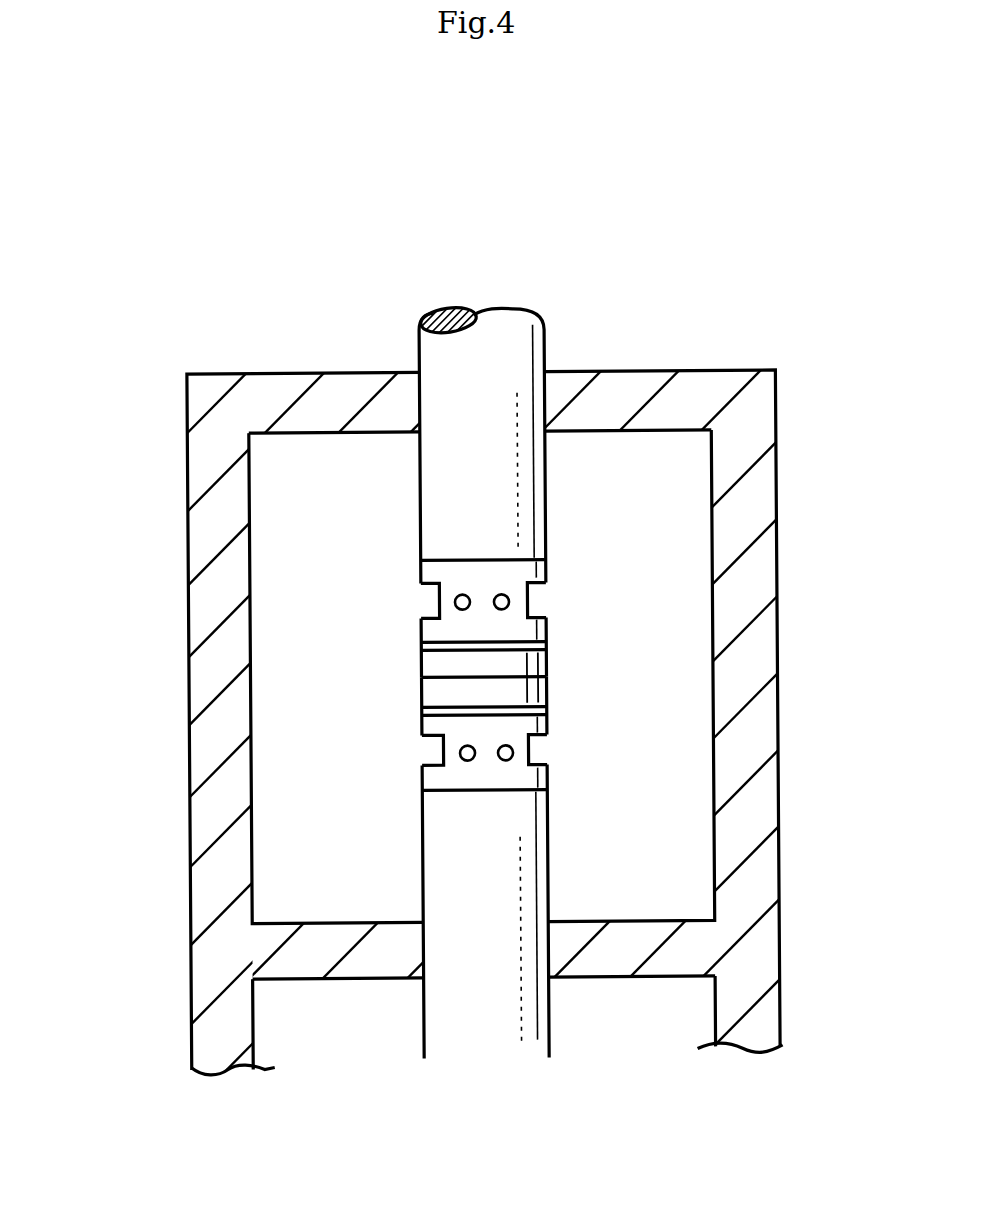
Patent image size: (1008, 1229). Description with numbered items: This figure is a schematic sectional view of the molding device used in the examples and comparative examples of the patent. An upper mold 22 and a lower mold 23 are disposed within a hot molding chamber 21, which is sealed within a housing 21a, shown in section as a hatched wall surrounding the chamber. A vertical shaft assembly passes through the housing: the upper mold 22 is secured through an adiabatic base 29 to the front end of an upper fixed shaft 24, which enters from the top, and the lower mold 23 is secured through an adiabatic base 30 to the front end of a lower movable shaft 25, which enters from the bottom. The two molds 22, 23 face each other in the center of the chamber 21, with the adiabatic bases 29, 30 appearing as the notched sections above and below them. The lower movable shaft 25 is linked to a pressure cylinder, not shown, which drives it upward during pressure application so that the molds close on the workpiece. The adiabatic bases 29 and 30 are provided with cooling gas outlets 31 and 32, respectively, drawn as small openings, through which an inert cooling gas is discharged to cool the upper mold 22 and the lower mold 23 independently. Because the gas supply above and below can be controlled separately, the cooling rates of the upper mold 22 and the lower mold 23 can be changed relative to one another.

The hot molding chamber 21 is at (593, 560).
The housing 21a is at (185, 458).
The upper mold 22 is at (517, 663).
The lower mold 23 is at (517, 693).
The upper fixed shaft 24 is at (512, 358).
The lower movable shaft 25 is at (503, 877).
The adiabatic base 29 is at (440, 598).
The adiabatic base 30 is at (445, 751).
The cooling gas outlets 31 is at (502, 612).
The cooling gas outlets 32 is at (503, 763).